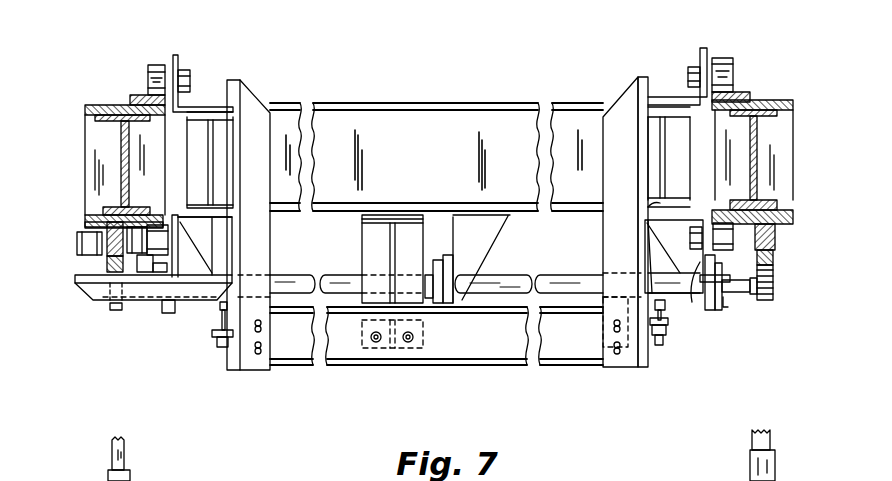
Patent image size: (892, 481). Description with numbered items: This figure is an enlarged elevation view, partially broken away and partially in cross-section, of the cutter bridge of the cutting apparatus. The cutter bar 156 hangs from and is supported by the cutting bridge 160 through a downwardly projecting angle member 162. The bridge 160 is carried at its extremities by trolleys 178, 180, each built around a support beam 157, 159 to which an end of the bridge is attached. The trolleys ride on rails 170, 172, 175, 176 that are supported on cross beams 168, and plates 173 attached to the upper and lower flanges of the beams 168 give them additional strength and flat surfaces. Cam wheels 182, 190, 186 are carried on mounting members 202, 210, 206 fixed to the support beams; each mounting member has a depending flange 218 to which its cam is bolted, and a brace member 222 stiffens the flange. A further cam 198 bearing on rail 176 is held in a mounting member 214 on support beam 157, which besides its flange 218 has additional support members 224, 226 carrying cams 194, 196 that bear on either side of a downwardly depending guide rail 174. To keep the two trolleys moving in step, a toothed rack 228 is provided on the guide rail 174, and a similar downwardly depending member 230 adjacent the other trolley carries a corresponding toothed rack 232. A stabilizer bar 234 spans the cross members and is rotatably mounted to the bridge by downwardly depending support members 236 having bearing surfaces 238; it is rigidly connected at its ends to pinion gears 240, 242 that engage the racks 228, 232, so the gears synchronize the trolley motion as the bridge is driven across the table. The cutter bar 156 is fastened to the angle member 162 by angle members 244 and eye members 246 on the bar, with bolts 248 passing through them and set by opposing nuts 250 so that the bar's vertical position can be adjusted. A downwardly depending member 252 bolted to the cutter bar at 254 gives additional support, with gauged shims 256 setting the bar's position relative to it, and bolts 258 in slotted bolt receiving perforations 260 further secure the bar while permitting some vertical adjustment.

The cutter bar 156 is at (460, 362).
The support beam 157 is at (215, 137).
The support beam 159 is at (662, 137).
The cutting bridge 160 is at (432, 110).
The angle member 162 is at (262, 96).
The cross beam 168 is at (85, 139).
The rail 170 is at (750, 92).
The rail 172 is at (130, 95).
The plate 173 is at (86, 105).
The downwardly depending guide rail 174 is at (85, 228).
The rail 175 is at (712, 212).
The rail 176 is at (166, 225).
The trolley 178 is at (215, 88).
The trolley 180 is at (679, 58).
The cam wheel 182 is at (733, 64).
The cam wheel 186 is at (721, 250).
The cam wheel 190 is at (148, 67).
The cam 194 is at (77, 243).
The cam 196 is at (137, 255).
The cam 198 is at (154, 227).
The mounting member 202 is at (702, 67).
The mounting member 206 is at (697, 277).
The mounting member 210 is at (217, 100).
The mounting member 214 is at (127, 315).
The flange 218 is at (178, 65).
The brace member 222 is at (662, 222).
The support member 224 is at (213, 242).
The support member 226 is at (92, 295).
The toothed rack 228 is at (107, 255).
The downwardly depending member 230 is at (775, 243).
The toothed rack 232 is at (773, 268).
The stabilizer bar 234 is at (294, 275).
The support member 236 is at (475, 258).
The bearing surface 238 is at (475, 247).
The pinion gear 240 is at (764, 300).
The pinion gear 242 is at (115, 310).
The angle member 244 is at (215, 322).
The eye member 246 is at (216, 348).
The bolt 248 is at (223, 350).
The nut 250 is at (220, 307).
The downwardly depending member 252 is at (392, 255).
The bolt 254 is at (378, 342).
The shim 256 is at (360, 218).
The bolt 258 is at (616, 353).
The slotted bolt receiving perforation 260 is at (262, 352).